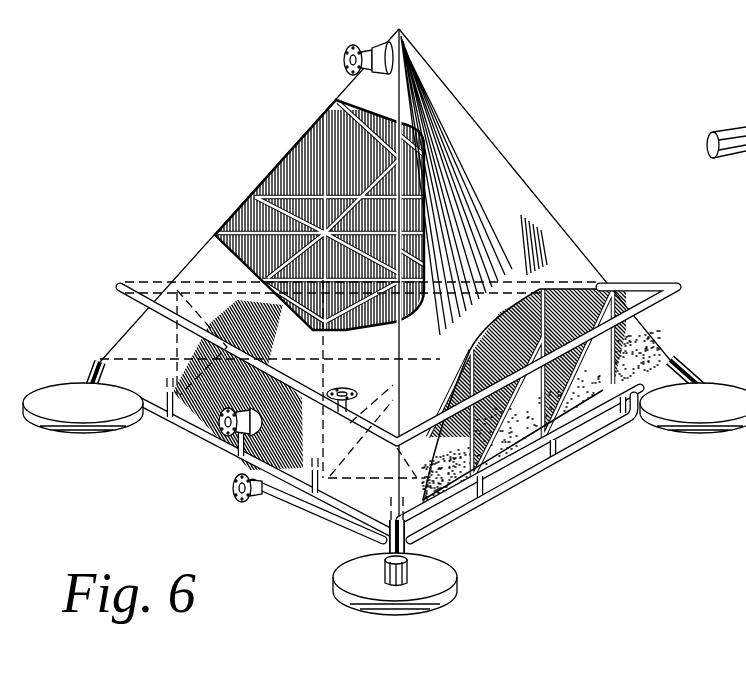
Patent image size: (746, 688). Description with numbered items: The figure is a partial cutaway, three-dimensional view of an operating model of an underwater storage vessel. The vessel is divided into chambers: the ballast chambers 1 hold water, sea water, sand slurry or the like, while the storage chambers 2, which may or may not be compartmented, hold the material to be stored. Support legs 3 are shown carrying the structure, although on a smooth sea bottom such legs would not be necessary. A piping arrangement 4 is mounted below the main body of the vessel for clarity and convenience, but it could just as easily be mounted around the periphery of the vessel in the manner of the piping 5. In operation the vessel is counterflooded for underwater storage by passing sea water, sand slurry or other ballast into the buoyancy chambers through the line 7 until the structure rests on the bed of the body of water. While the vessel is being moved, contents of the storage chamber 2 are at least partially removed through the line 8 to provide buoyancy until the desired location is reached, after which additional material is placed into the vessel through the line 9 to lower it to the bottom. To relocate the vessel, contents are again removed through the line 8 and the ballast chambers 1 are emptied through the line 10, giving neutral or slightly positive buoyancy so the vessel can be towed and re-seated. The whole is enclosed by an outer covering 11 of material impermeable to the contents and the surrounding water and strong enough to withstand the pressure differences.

The ballast chambers 1 is at (652, 327).
The storage chambers 2 is at (318, 158).
The support legs 3 is at (723, 418).
The piping arrangement 4 is at (333, 512).
The piping 5 is at (637, 282).
The line 7 is at (343, 378).
The line 8 is at (150, 433).
The line 9 is at (338, 63).
The line 10 is at (170, 497).
The outer covering 11 is at (495, 157).